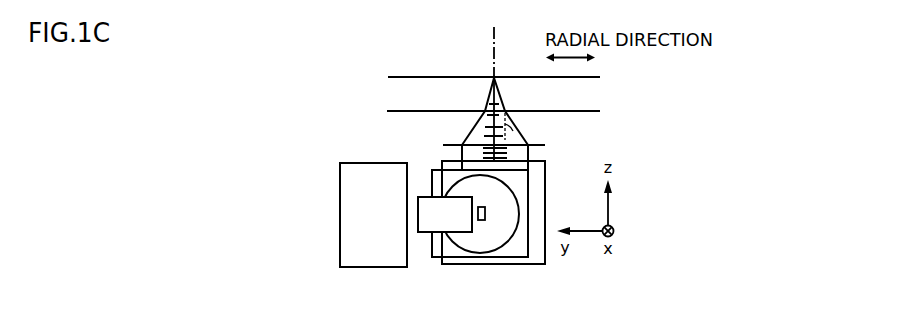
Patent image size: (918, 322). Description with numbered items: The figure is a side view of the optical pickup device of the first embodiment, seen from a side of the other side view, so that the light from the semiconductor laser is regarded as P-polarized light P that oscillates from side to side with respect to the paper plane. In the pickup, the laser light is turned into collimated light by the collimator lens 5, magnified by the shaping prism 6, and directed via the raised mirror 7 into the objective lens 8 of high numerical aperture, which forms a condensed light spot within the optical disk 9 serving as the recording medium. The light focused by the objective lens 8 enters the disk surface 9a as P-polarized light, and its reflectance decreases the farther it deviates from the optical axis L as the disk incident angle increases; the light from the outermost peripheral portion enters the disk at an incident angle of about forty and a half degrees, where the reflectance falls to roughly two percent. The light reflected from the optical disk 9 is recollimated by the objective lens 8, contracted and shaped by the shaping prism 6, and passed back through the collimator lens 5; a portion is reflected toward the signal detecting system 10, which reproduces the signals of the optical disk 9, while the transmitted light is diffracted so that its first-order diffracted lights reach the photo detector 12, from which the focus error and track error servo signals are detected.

The collimator lens 5 is at (463, 252).
The shaping prism 6 is at (508, 257).
The raised mirror 7 is at (535, 264).
The objective lens 8 is at (450, 145).
The optical disk 9 is at (412, 82).
The disk surface 9a is at (582, 113).
The signal detecting system 10 is at (373, 162).
The photo detector 12 is at (427, 232).
The optical axis L is at (494, 38).
The P-polarized light P is at (498, 93).